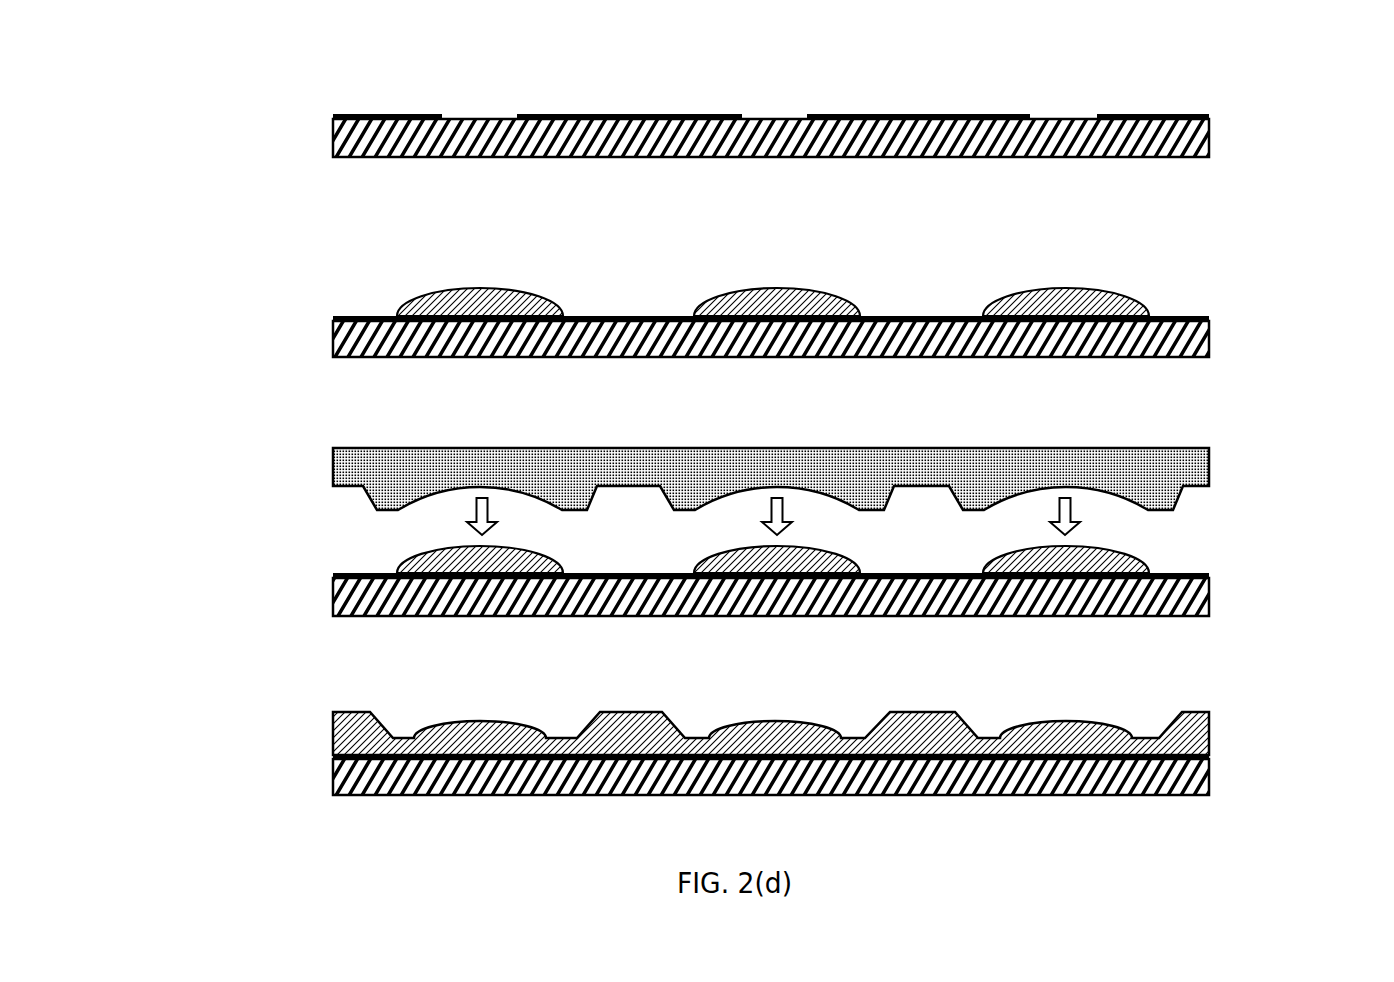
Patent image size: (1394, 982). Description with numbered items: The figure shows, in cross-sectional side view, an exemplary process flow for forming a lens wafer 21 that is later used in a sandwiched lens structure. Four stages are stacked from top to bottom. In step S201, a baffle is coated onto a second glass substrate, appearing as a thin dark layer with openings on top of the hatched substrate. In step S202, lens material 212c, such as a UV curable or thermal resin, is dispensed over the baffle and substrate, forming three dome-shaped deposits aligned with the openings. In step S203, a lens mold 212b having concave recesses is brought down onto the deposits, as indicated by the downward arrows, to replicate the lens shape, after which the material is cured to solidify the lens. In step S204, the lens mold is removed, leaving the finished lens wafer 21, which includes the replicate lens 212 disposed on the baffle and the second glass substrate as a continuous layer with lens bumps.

The lens wafer 21 is at (653, 753).
The replicate lens 212 is at (333, 737).
The lens mold 212b is at (333, 462).
The lens material 212c is at (442, 280).
The step S201 is at (800, 89).
The step S202 is at (822, 291).
The step S203 is at (786, 516).
The step S204 is at (732, 735).